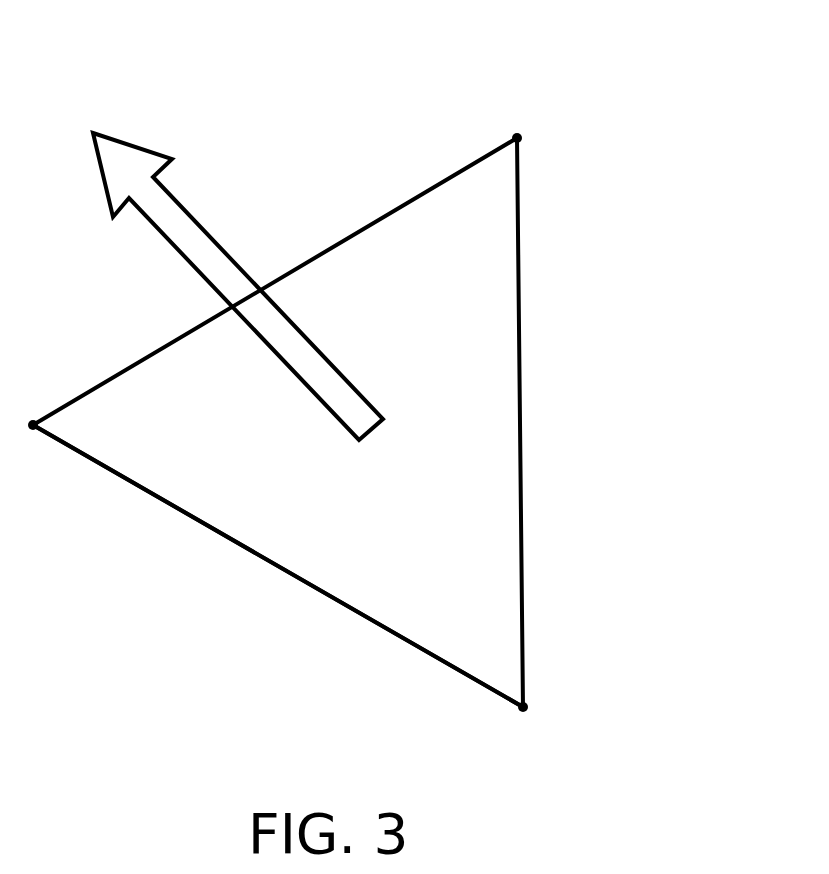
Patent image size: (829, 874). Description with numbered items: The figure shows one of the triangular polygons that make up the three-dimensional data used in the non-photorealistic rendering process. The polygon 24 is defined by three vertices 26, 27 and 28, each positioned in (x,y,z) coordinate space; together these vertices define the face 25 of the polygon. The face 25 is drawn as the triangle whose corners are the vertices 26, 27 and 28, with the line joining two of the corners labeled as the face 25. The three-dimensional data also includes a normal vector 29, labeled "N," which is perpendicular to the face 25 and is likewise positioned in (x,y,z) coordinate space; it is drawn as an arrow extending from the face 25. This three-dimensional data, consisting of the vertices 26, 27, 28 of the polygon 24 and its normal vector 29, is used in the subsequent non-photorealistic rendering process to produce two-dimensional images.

The polygon 24 is at (685, 101).
The face 25 is at (240, 523).
The vertex 26 is at (519, 134).
The vertex 27 is at (33, 430).
The vertex 28 is at (527, 703).
The normal vector 29 is at (228, 278).